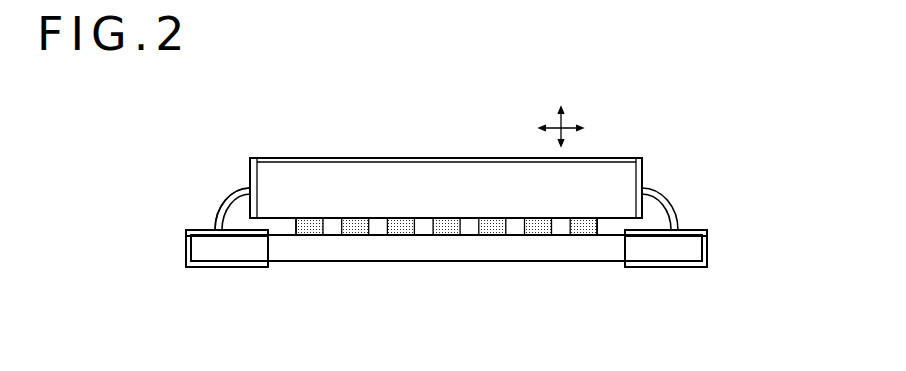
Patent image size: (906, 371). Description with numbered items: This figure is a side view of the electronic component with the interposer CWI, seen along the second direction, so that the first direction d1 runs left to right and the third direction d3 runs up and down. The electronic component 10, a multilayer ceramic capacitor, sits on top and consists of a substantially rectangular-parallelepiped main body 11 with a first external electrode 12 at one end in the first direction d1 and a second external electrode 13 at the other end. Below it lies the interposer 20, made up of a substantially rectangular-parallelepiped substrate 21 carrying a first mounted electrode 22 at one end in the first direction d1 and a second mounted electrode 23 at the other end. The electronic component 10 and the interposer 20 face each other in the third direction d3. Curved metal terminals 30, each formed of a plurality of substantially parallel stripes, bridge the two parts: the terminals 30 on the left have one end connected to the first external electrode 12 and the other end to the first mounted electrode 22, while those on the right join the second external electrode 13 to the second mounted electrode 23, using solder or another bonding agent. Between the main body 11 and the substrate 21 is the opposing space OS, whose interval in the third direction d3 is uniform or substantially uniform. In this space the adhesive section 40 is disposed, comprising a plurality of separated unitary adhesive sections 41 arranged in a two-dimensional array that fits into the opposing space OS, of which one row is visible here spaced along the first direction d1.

The electronic component 10 is at (444, 157).
The main body 11 is at (349, 163).
The first external electrode 12 is at (251, 157).
The second external electrode 13 is at (641, 157).
The interposer 20 is at (412, 283).
The substrate 21 is at (232, 248).
The first mounted electrode 22 is at (205, 232).
The second mounted electrode 23 is at (695, 232).
The metal terminal 30 is at (228, 193).
The adhesive section 40 is at (471, 277).
The unitary adhesive section 41 is at (310, 233).
The electronic component with the interposer CWI is at (240, 163).
The opposing space OS is at (288, 228).
The first direction d1 is at (574, 128).
The third direction d3 is at (558, 113).